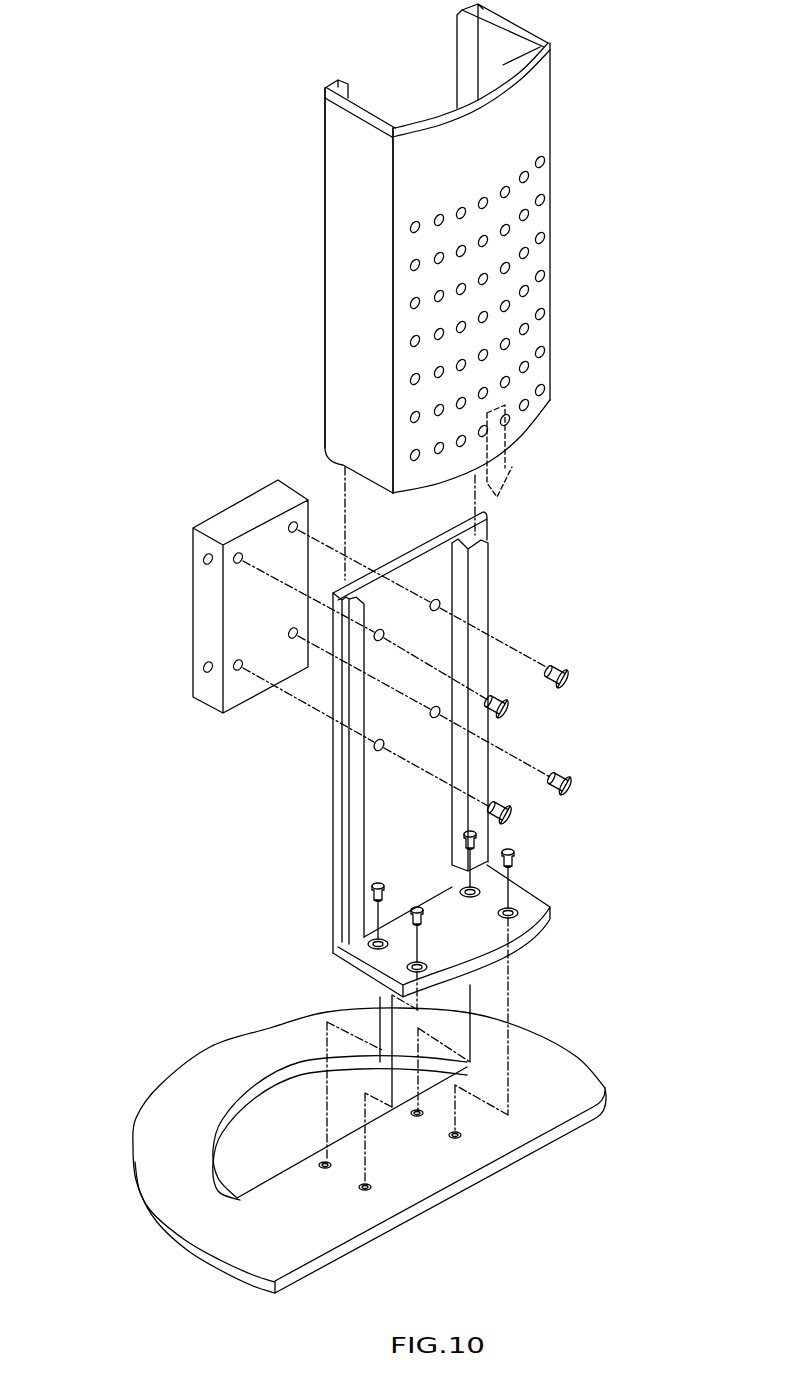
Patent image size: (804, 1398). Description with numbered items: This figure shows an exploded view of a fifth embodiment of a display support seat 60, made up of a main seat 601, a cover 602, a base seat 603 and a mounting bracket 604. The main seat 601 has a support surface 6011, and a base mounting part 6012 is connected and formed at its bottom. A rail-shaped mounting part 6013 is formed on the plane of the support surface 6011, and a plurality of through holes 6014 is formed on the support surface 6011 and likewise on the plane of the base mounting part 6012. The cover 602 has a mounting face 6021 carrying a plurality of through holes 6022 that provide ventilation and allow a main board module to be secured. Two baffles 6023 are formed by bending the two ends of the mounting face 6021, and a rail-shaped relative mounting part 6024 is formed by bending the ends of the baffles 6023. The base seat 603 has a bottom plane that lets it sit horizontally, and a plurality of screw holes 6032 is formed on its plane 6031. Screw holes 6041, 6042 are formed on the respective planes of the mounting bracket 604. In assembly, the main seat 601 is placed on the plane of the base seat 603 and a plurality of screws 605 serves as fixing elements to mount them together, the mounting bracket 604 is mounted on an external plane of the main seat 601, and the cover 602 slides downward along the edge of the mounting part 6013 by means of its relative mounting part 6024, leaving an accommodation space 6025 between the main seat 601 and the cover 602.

The display support seat 60 is at (283, 289).
The cover 602 is at (548, 333).
The mounting face 6021 is at (540, 407).
The through holes 6022 is at (523, 215).
The baffle 6023 is at (338, 386).
The relative mounting part 6024 is at (340, 80).
The accommodation space 6025 is at (548, 43).
The mounting bracket 604 is at (243, 510).
The screw holes 6041 is at (205, 557).
The screw holes 6042 is at (241, 668).
The main seat 601 is at (334, 813).
The support surface 6011 is at (436, 577).
The base mounting part 6012 is at (533, 910).
The mounting part 6013 is at (480, 582).
The through holes 6014 is at (440, 606).
The screws 605 is at (572, 683).
The base seat 603 is at (207, 1066).
The plane 6031 is at (493, 1145).
The screw holes 6032 is at (368, 1185).